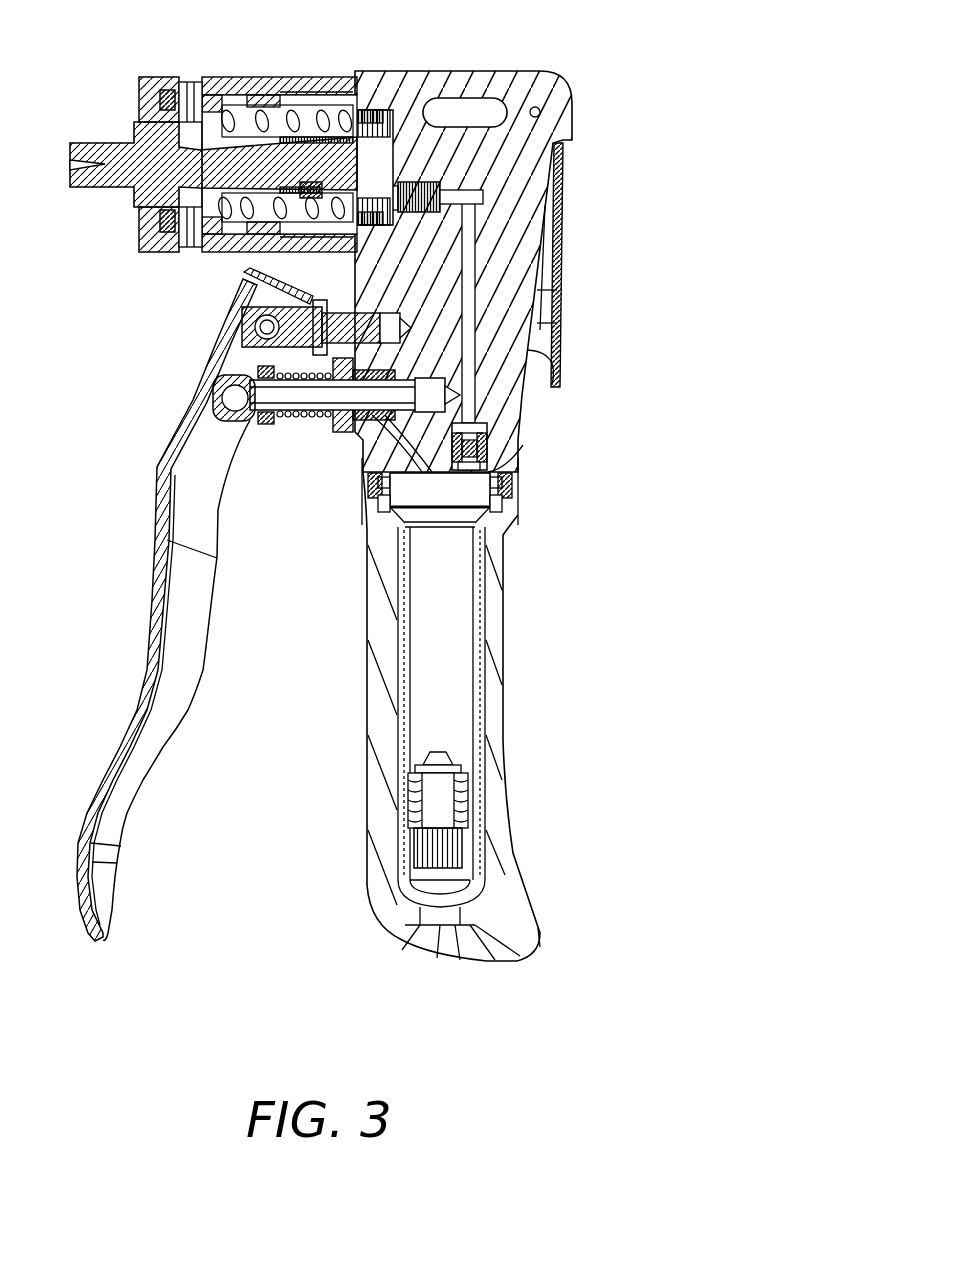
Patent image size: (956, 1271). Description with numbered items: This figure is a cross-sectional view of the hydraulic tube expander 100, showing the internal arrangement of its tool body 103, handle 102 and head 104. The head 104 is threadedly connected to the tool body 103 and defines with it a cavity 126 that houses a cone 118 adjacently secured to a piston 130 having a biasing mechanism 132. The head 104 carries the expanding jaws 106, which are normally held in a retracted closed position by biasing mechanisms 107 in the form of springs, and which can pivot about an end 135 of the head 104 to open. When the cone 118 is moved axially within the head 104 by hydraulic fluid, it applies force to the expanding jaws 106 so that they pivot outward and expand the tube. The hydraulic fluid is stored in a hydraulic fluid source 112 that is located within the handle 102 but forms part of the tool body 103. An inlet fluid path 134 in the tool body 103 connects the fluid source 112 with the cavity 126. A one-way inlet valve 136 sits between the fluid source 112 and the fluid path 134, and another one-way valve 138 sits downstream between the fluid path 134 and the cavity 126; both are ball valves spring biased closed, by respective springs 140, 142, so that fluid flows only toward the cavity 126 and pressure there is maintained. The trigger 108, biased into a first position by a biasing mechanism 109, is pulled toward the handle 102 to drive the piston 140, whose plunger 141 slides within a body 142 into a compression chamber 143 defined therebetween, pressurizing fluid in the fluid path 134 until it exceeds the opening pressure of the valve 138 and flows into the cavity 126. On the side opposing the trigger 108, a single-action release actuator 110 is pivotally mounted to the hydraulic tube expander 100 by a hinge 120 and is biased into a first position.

The hydraulic tube expander 100 is at (712, 1062).
The handle 102 is at (505, 687).
The tool body 103 is at (530, 378).
The head 104 is at (215, 152).
The expanding jaws 106 is at (76, 178).
The biasing mechanisms 107 is at (168, 90).
The trigger 108 is at (170, 682).
The biasing mechanism 109 is at (287, 418).
The single-action release actuator 110 is at (557, 222).
The hydraulic fluid source 112 is at (455, 598).
The cone 118 is at (212, 228).
The hinge 120 is at (541, 112).
The cavity 126 is at (310, 110).
The piston 130 is at (352, 96).
The biasing mechanism 132 is at (270, 106).
The inlet fluid path 134 is at (468, 265).
The end 135 is at (154, 106).
The one-way inlet valve 136 is at (507, 476).
The one-way valve 138 is at (483, 202).
The piston 140 is at (338, 422).
The plunger 141 is at (280, 402).
The body 142 is at (413, 184).
The compression chamber 143 is at (378, 510).